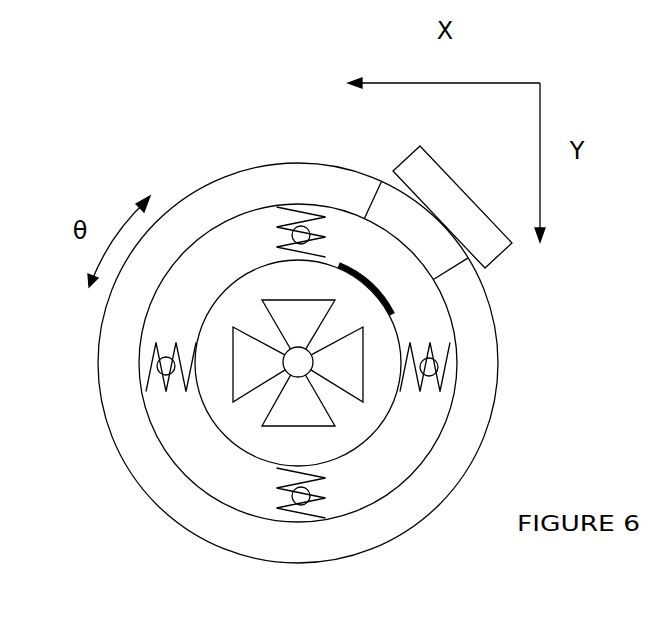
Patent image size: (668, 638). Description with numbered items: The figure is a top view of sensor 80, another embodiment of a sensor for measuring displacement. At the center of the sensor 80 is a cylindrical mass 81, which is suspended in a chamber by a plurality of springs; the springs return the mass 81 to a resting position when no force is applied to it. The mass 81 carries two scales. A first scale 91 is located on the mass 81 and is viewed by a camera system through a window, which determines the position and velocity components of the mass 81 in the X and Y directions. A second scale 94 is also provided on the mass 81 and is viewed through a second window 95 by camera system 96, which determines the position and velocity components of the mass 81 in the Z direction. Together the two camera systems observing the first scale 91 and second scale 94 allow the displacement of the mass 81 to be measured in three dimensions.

The sensor 80 is at (235, 53).
The cylindrical mass 81 is at (222, 442).
The first scale 91 is at (298, 415).
The second scale 94 is at (392, 302).
The second window 95 is at (390, 207).
The camera system 96 is at (447, 190).